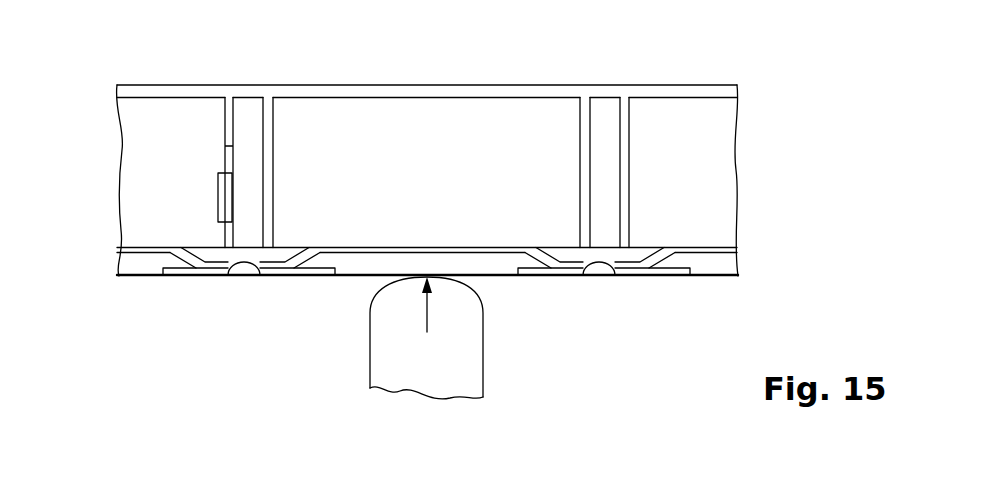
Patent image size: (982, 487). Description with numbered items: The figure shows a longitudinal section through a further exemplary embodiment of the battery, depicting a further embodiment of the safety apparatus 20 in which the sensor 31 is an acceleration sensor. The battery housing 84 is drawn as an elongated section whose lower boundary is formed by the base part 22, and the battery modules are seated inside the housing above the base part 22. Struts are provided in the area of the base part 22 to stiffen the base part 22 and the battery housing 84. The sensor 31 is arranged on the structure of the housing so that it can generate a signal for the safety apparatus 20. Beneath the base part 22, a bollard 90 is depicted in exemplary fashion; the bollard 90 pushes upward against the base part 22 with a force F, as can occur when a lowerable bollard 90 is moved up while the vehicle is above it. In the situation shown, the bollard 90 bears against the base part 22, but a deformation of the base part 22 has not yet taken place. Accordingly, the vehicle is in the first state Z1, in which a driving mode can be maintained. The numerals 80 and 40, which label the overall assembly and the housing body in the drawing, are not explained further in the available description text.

The battery module 80 is at (168, 62).
The housing 40 is at (135, 173).
The battery housing 84 is at (373, 84).
The sensor 31 is at (227, 196).
The first state Z1 is at (760, 59).
The safety apparatus 20 is at (351, 300).
The base part 22 is at (705, 280).
The bollard 90 is at (470, 363).
The force F is at (427, 311).